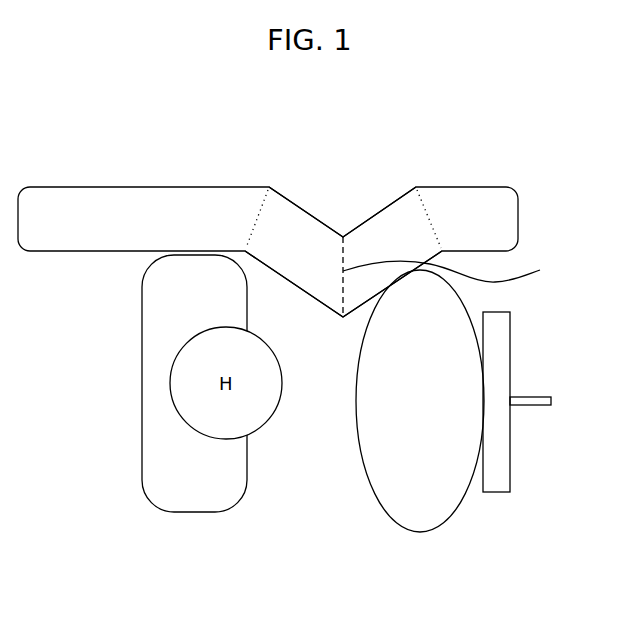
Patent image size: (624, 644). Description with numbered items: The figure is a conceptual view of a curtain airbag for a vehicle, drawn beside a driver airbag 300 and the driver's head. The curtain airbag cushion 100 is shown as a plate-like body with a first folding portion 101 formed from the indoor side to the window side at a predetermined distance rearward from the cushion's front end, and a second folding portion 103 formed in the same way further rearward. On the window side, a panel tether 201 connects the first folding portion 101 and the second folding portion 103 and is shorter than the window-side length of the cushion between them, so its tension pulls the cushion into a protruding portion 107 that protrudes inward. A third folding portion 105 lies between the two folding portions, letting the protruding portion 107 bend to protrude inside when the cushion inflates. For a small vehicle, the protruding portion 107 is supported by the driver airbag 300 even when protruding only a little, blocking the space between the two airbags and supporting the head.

The curtain airbag cushion 100 is at (521, 174).
The first folding portion 101 is at (428, 203).
The second folding portion 103 is at (258, 203).
The third folding portion 105 is at (544, 269).
The protruding portion 107 is at (305, 253).
The panel tether 201 is at (342, 188).
The driver airbag 300 is at (420, 513).